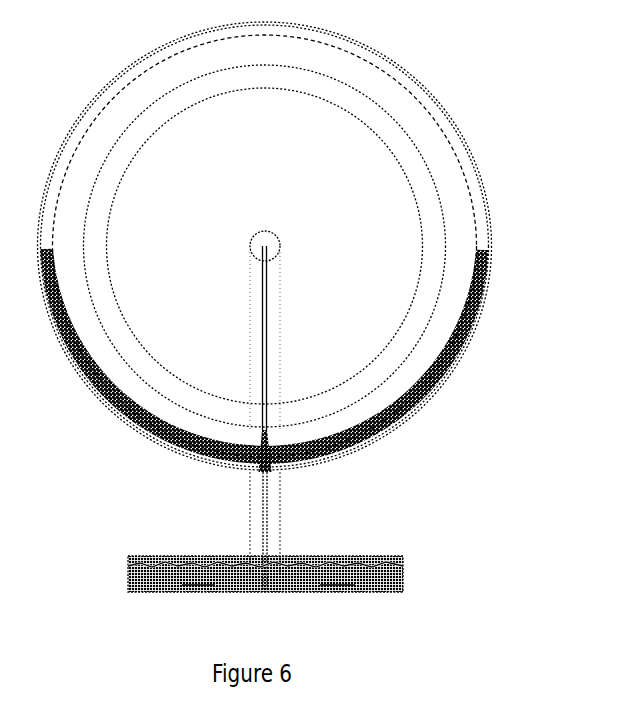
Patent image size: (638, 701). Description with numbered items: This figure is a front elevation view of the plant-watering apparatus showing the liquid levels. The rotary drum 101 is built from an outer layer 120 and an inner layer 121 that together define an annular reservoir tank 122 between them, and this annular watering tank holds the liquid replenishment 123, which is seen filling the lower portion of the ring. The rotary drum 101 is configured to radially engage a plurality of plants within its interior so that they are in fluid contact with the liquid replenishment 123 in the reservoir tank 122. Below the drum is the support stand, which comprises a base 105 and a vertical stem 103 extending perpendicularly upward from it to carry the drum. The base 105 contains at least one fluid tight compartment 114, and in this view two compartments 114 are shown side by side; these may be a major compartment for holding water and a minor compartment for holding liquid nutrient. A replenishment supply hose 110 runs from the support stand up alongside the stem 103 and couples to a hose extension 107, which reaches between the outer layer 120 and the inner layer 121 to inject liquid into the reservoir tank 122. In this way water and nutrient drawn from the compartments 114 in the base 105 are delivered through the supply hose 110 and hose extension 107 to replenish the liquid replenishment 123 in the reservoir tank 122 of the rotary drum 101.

The rotary drum 101 is at (308, 246).
The outer layer 120 is at (461, 129).
The inner layer 121 is at (461, 157).
The reservoir tank 122 is at (488, 214).
The liquid replenishment 123 is at (463, 343).
The hose extension 107 is at (268, 325).
The vertical stem 103 is at (250, 517).
The replenishment supply hose 110 is at (282, 520).
The base 105 is at (386, 557).
The fluid tight compartment 114 is at (268, 575).